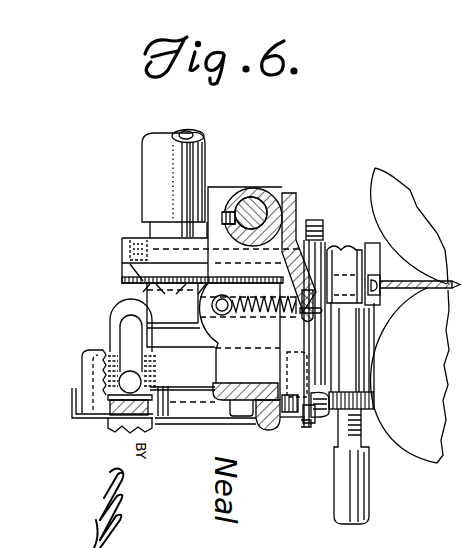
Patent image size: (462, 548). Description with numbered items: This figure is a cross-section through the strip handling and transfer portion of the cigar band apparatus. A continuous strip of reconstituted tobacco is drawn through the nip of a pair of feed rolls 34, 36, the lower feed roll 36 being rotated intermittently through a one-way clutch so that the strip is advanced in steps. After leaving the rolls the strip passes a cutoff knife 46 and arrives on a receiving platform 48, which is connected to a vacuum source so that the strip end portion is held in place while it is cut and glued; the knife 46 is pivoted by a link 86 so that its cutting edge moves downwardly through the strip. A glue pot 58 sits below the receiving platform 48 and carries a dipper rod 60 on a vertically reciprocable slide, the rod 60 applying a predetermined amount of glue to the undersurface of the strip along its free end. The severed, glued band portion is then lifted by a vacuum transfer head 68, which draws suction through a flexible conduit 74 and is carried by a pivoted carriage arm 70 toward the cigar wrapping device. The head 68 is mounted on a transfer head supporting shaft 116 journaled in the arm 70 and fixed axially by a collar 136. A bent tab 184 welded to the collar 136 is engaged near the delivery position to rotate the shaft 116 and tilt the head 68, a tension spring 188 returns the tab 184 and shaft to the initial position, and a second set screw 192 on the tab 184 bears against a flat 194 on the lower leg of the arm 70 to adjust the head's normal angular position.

The feed roll 34 is at (394, 187).
The feed roll 36 is at (428, 400).
The cutoff knife 46 is at (324, 233).
The receiving platform 48 is at (186, 317).
The glue pot 58 is at (88, 350).
The dipper rod 60 is at (155, 384).
The vacuum transfer head 68 is at (131, 228).
The carriage arm 70 is at (262, 340).
The flexible conduit 74 is at (206, 153).
The link 86 is at (366, 500).
The transfer head supporting shaft 116 is at (284, 195).
The collar 136 is at (257, 202).
The bent tab 184 is at (310, 360).
The tension spring 188 is at (185, 314).
The second set screw 192 is at (294, 423).
The flat 194 is at (281, 426).